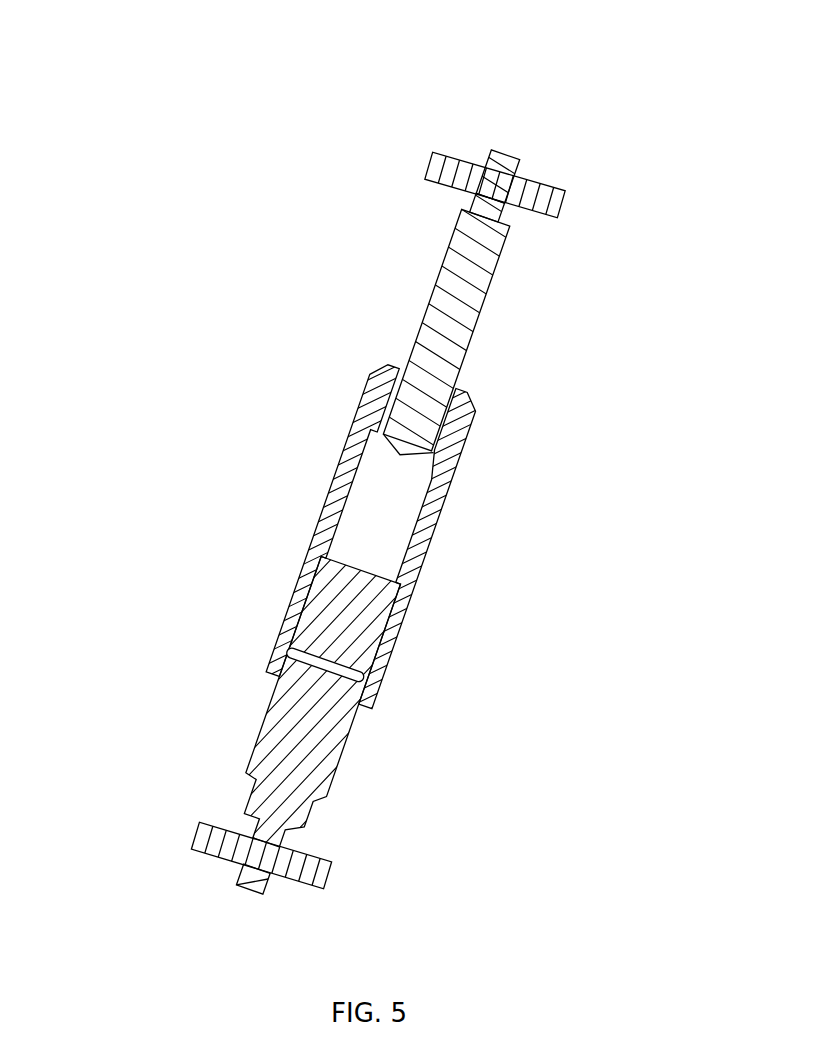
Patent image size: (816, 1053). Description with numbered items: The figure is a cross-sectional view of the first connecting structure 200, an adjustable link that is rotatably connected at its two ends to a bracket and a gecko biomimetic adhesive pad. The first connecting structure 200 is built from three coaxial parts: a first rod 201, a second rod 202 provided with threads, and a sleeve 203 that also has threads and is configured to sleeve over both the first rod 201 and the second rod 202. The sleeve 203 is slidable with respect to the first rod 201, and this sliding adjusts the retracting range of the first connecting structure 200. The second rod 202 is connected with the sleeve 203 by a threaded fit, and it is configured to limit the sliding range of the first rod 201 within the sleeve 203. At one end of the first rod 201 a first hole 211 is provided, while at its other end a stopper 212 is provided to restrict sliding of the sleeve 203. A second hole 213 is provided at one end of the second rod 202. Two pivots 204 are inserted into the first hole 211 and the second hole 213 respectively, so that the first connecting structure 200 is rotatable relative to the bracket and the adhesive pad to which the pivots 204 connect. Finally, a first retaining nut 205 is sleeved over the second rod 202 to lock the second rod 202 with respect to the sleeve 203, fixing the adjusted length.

The first connecting structure 200 is at (357, 102).
The first rod 201 is at (436, 363).
The second rod 202 is at (292, 739).
The sleeve 203 is at (427, 539).
The pivot 204 is at (532, 201).
The first retaining nut 205 is at (275, 657).
The first hole 211 is at (474, 200).
The stopper 212 is at (401, 449).
The second hole 213 is at (286, 880).